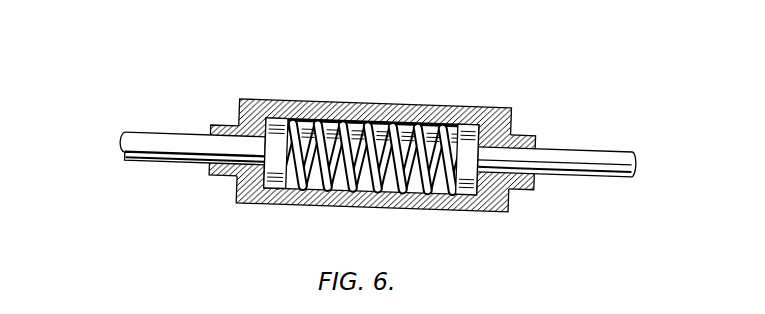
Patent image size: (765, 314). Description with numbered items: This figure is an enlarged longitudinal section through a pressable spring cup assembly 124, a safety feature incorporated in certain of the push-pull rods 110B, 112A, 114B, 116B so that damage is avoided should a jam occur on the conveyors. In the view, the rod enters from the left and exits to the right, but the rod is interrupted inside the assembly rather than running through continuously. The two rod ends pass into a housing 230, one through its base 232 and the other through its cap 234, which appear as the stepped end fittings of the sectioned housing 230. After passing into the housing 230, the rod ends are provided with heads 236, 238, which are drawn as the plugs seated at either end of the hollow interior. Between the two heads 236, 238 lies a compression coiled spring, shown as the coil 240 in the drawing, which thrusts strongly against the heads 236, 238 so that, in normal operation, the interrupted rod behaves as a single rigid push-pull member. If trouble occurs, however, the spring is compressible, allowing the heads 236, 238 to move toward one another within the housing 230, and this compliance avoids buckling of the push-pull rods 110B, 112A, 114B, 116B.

The spring cup assembly 124 is at (384, 154).
The housing 230 is at (325, 102).
The base 232 is at (522, 135).
The cap 234 is at (239, 125).
The head 236 is at (469, 124).
The head 238 is at (277, 118).
The compression spring 240 is at (384, 188).
The push-pull rod 110B is at (337, 181).
The push-pull rod 112A is at (357, 181).
The push-pull rod 114B is at (377, 181).
The push-pull rod 116B is at (162, 166).